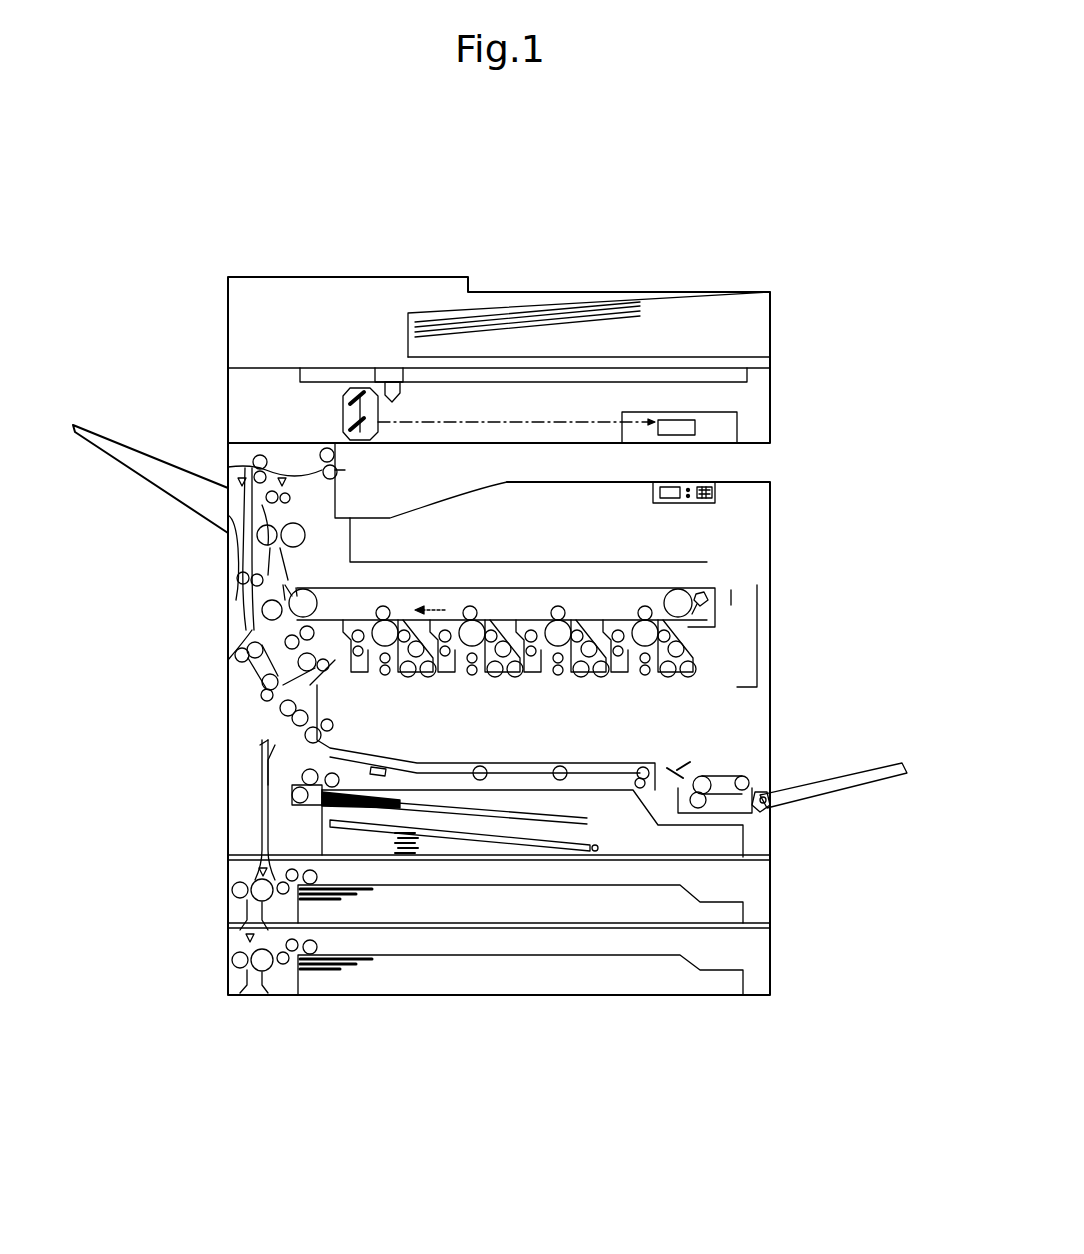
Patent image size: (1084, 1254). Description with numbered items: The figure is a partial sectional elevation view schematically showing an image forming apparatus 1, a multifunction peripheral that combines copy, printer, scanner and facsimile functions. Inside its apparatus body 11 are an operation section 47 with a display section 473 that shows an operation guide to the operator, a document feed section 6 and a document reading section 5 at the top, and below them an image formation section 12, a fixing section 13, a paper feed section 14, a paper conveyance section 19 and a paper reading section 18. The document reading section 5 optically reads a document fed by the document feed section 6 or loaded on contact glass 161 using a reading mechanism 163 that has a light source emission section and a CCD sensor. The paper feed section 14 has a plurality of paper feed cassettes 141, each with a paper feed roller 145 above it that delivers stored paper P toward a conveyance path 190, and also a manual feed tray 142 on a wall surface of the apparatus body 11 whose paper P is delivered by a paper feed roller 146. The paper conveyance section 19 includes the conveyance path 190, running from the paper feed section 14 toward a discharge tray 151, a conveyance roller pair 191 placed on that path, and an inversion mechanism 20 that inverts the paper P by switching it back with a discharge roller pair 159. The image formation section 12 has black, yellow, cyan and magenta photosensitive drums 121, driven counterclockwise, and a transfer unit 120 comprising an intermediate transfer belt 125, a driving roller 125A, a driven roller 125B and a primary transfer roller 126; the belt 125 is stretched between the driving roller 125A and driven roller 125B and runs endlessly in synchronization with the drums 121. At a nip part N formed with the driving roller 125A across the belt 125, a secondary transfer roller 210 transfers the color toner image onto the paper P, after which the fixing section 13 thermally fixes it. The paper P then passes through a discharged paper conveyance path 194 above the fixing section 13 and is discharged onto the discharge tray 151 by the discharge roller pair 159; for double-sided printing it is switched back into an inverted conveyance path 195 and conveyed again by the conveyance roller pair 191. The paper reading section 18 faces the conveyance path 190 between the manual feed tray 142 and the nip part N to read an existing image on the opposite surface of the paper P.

The image forming apparatus 1 is at (845, 352).
The document reading section 5 is at (212, 402).
The document feed section 6 is at (612, 283).
The apparatus body 11 is at (771, 505).
The image formation section 12 is at (730, 627).
The fixing section 13 is at (240, 543).
The paper feed section 14 is at (745, 884).
The paper reading section 18 is at (380, 778).
The paper conveyance section 19 is at (345, 683).
The inversion mechanism 20 is at (237, 548).
The nip part N is at (250, 578).
The operation section 47 is at (718, 497).
The transfer unit 120 is at (512, 608).
The photosensitive drums 121 is at (385, 606).
The intermediate transfer belt 125 is at (670, 588).
The driving roller 125A is at (293, 590).
The driven roller 125B is at (700, 592).
The primary transfer roller 126 is at (638, 612).
The paper feed cassettes 141 is at (756, 828).
The manual feed tray 142 is at (862, 768).
The paper feed roller 145 is at (305, 937).
The paper feed roller 146 is at (745, 776).
The discharge tray 151 is at (358, 520).
The discharge roller pair 159 is at (335, 458).
The contact glass 161 is at (640, 378).
The reading mechanism 163 is at (336, 411).
The conveyance path 190 is at (250, 600).
The conveyance roller pair 191 is at (256, 492).
The discharged paper conveyance path 194 is at (300, 460).
The inverted conveyance path 195 is at (290, 604).
The secondary transfer roller 210 is at (270, 648).
The display section 473 is at (680, 481).
The paper P is at (583, 812).